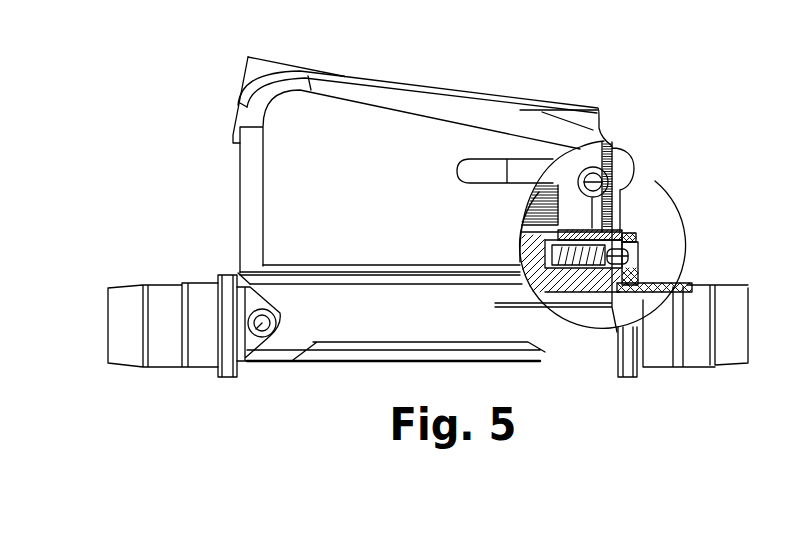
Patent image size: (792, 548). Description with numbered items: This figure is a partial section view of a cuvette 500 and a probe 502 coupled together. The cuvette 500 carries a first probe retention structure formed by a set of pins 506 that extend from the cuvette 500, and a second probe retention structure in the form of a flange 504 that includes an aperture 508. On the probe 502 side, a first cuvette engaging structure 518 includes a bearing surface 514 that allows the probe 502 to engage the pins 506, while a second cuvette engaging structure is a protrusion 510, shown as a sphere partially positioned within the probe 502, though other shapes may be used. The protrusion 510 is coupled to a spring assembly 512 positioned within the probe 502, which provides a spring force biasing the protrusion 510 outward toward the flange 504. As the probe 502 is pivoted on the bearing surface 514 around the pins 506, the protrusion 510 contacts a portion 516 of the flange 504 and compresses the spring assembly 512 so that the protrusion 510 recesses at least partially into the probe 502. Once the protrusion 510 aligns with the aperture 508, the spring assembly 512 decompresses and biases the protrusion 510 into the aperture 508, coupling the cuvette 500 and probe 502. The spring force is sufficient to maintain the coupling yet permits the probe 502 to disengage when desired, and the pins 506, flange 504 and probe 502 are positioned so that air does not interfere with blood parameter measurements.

The cuvette 500 is at (700, 350).
The probe 502 is at (463, 117).
The flange 504 is at (633, 278).
The pins 506 is at (246, 362).
The aperture 508 is at (638, 257).
The protrusion 510 is at (622, 226).
The spring assembly 512 is at (565, 258).
The bearing surface 514 is at (240, 307).
The portion of the second probe retention structure 516 is at (627, 233).
The first cuvette engaging structure 518 is at (275, 343).